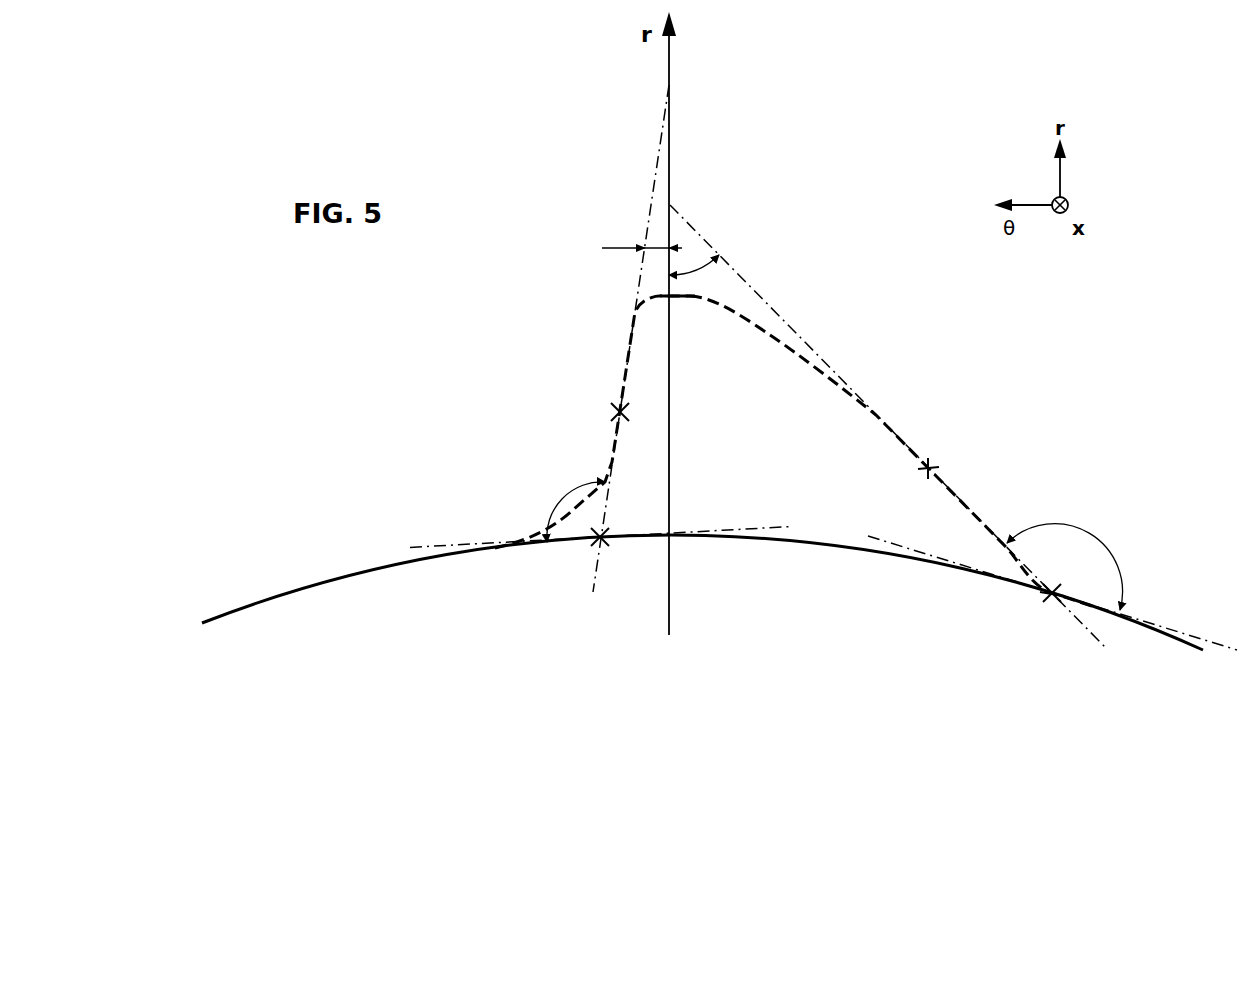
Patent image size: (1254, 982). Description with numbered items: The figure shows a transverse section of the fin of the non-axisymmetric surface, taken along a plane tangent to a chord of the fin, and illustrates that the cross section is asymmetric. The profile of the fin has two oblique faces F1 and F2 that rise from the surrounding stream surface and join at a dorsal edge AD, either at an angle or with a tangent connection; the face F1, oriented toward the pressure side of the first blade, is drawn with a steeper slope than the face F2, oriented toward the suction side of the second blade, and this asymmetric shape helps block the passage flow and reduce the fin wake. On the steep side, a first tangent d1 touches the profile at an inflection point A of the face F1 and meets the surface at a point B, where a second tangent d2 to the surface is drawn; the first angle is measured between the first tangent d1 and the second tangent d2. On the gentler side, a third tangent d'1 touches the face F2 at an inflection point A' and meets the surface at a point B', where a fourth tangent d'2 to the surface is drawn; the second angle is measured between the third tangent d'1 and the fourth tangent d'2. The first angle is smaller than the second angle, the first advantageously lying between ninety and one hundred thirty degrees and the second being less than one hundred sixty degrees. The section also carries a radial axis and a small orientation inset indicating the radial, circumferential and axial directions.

The first tangent d1 is at (650, 200).
The third tangent d'1 is at (887, 426).
The second tangent d2 is at (450, 546).
The fourth tangent d'2 is at (1053, 593).
The face oriented toward the pressure side F1 is at (641, 316).
The face oriented toward the suction side F2 is at (762, 326).
The dorsal edge AD is at (684, 297).
The inflection point A is at (595, 409).
The point B at hub intersection B is at (607, 567).
The point A' on second profile A' is at (952, 454).
The point B' at hub intersection B' is at (1032, 616).